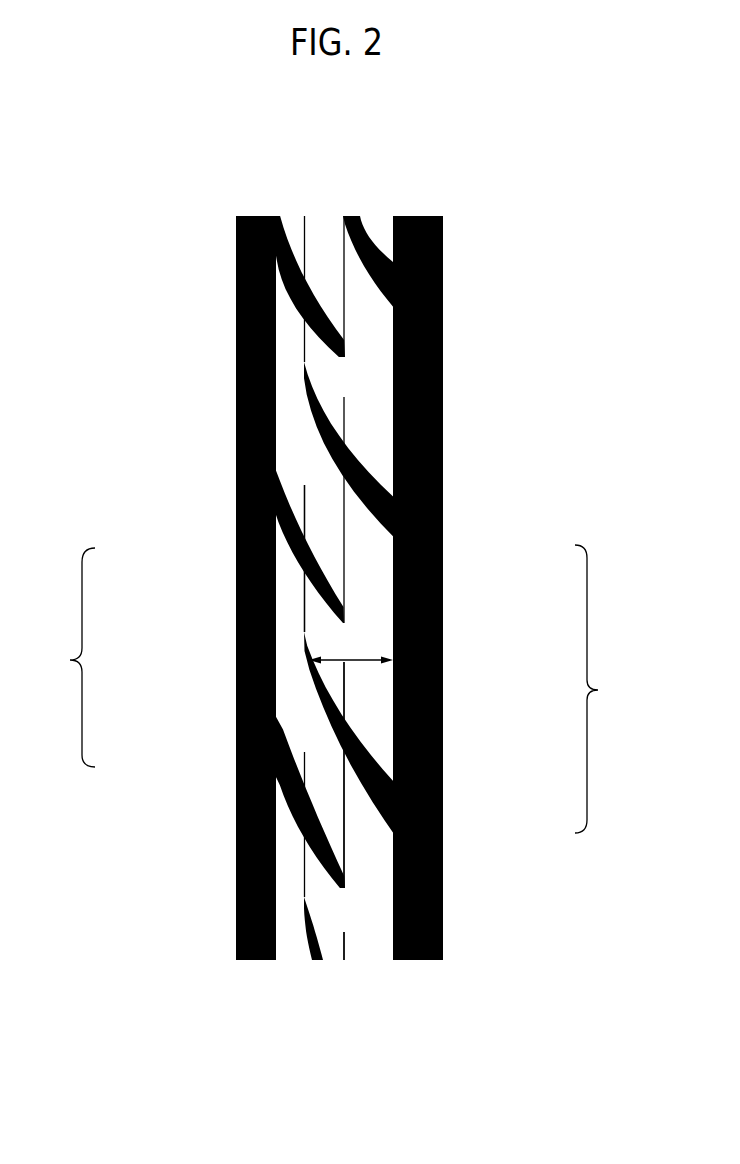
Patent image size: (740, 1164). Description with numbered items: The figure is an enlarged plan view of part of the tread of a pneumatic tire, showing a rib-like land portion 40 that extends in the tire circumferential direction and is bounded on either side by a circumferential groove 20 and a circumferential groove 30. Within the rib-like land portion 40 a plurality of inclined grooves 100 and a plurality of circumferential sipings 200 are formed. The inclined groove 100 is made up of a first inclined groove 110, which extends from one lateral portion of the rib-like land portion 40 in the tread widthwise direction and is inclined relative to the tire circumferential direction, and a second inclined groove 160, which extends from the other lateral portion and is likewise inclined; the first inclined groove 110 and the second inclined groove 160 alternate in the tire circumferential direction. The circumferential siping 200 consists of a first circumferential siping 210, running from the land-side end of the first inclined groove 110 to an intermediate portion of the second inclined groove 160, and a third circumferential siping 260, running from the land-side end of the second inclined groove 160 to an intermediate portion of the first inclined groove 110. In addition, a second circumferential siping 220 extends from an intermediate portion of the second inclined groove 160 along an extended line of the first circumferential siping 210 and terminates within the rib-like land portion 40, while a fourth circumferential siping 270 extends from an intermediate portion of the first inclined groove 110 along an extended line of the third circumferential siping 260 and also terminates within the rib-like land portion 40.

The circumferential groove 20 is at (423, 226).
The circumferential groove 30 is at (253, 225).
The rib-like land portion 40 is at (322, 225).
The inclined groove 100 is at (209, 654).
The first inclined groove 110 is at (298, 560).
The second inclined groove 160 is at (320, 713).
The circumferential siping 200 is at (474, 661).
The first circumferential siping 210 is at (344, 815).
The second circumferential siping 220 is at (344, 695).
The third circumferential siping 260 is at (305, 619).
The fourth circumferential siping 270 is at (305, 525).